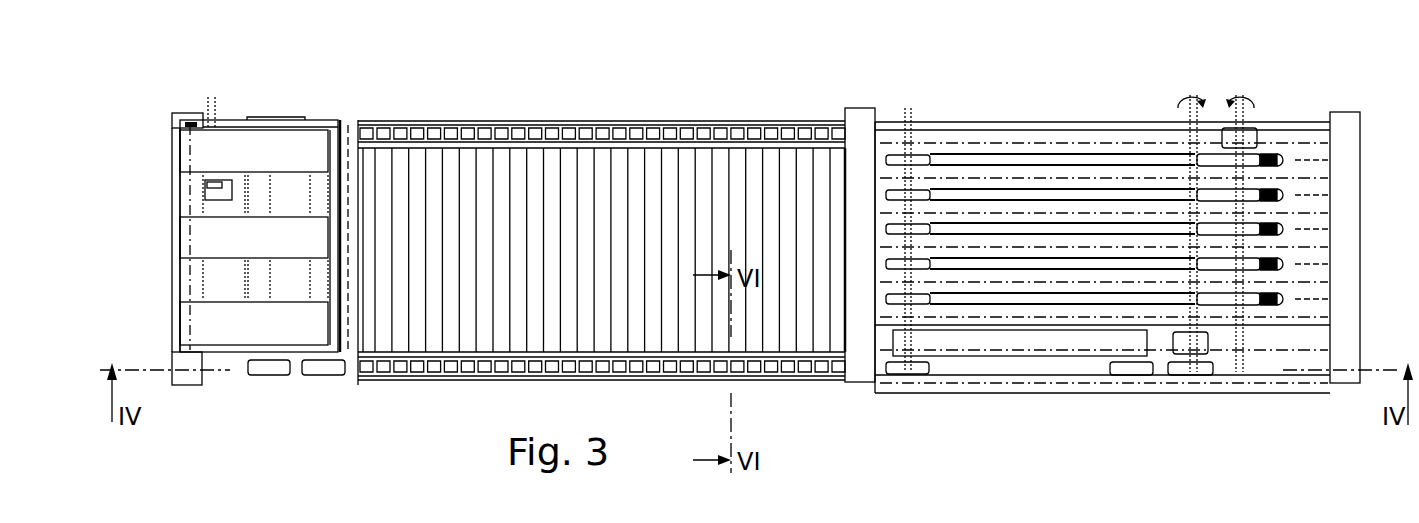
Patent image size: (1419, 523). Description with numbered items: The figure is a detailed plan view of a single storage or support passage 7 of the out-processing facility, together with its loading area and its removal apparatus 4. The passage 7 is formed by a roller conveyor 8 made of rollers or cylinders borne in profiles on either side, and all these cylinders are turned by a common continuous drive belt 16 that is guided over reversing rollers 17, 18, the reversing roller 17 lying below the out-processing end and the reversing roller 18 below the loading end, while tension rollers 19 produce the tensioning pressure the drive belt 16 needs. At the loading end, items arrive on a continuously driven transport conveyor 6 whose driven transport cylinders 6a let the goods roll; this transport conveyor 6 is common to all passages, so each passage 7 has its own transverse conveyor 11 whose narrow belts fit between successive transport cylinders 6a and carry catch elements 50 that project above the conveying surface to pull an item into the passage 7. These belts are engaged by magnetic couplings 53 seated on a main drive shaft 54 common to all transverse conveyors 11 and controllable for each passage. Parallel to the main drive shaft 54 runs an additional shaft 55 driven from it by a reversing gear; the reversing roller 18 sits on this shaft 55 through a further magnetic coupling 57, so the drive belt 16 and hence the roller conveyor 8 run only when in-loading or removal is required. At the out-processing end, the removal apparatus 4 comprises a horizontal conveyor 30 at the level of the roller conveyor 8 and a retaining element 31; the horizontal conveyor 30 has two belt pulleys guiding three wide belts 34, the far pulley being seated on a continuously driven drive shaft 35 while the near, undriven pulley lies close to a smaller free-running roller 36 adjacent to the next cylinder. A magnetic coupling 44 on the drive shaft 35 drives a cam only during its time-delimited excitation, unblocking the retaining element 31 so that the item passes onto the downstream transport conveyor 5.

The removal apparatus 4 is at (252, 108).
The transport conveyor 5 is at (483, 127).
The transport conveyor 6 is at (1052, 112).
The transport cylinders 6a is at (980, 207).
The passage 7 is at (773, 108).
The roller conveyor 8 is at (607, 212).
The transverse conveyor 11 is at (1278, 150).
The drive belt 16 is at (353, 377).
The reversing roller 17 is at (255, 375).
The reversing roller 18 is at (1180, 377).
The tension roller 19 is at (315, 375).
The horizontal conveyor 30 is at (336, 245).
The retaining element 31 is at (330, 188).
The belt 34 is at (290, 232).
The drive shaft 35 is at (212, 98).
The free-running roller 36 is at (357, 120).
The magnetic coupling 44 is at (195, 202).
The catch elements 50 is at (1283, 300).
The magnetic coupling 53 is at (1252, 135).
The main drive shaft 54 is at (1237, 367).
The additional shaft 55 is at (1190, 120).
The magnetic coupling 57 is at (1172, 350).